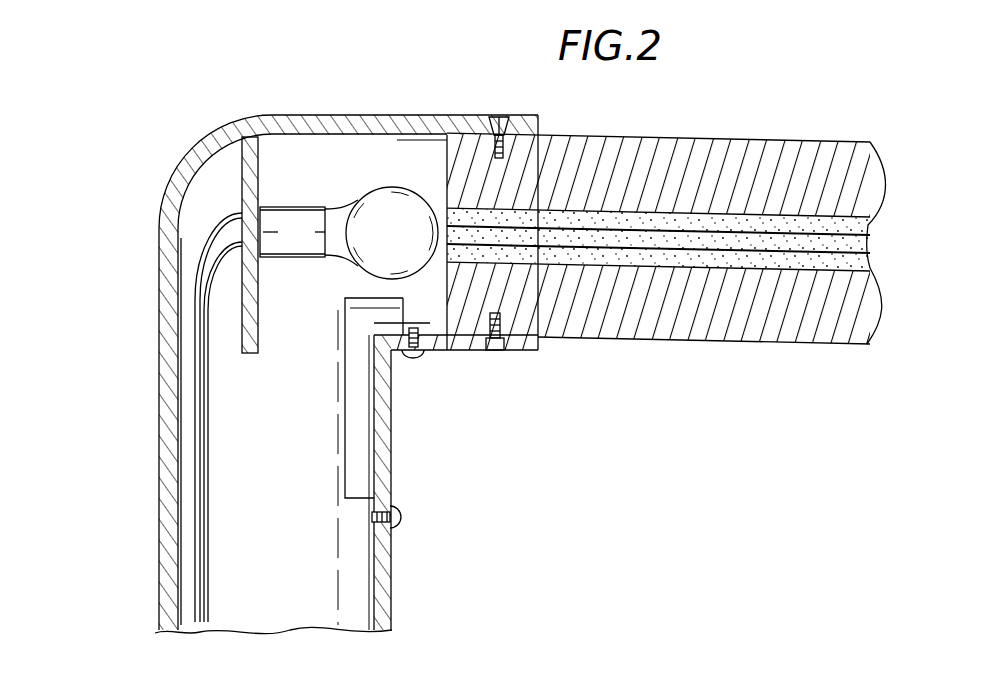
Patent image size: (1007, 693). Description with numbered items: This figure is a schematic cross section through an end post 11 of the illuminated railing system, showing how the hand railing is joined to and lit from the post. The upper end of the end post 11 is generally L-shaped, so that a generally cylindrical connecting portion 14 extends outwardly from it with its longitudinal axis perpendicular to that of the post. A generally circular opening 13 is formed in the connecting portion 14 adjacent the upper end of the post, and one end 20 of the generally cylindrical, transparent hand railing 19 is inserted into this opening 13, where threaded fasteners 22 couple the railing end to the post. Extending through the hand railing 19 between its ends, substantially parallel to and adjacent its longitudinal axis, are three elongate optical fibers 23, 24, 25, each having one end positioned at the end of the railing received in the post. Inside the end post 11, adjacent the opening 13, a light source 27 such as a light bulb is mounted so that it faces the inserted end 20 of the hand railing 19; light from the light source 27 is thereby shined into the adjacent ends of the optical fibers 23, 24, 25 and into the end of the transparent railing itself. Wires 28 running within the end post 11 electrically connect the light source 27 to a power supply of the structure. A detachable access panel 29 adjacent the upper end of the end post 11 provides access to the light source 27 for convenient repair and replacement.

The end post 11 is at (160, 230).
The opening 13 is at (540, 128).
The connecting portion 14 is at (360, 117).
The hand railing 19 is at (761, 150).
The end of hand railing 20 is at (450, 288).
The threaded fasteners 22 is at (500, 120).
The optical fiber 23 is at (870, 142).
The optical fiber 24 is at (853, 245).
The optical fiber 25 is at (868, 345).
The light source 27 is at (373, 205).
The wires 28 is at (198, 452).
The access panel 29 is at (386, 440).